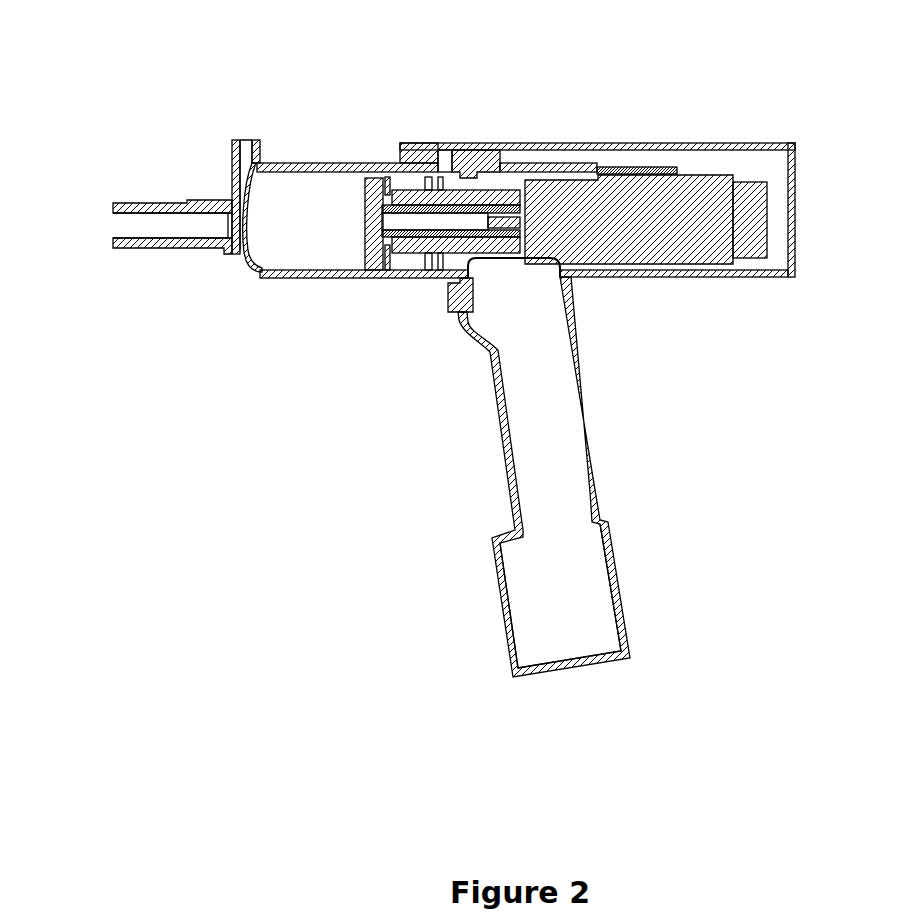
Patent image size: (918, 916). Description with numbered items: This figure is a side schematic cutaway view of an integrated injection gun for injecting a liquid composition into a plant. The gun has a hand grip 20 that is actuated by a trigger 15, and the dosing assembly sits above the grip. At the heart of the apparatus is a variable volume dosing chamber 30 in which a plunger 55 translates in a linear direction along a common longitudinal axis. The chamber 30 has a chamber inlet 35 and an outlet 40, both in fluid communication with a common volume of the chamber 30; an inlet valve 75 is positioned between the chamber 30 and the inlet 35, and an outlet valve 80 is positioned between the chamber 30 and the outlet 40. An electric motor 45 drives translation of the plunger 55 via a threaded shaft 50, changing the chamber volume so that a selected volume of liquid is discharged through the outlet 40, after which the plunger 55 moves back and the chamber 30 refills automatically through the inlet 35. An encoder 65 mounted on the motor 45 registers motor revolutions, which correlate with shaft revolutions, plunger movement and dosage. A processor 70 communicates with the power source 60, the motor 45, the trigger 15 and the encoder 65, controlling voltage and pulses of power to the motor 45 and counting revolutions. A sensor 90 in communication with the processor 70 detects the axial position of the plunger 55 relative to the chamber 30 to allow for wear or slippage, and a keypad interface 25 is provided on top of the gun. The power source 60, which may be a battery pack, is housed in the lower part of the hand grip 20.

The trigger 15 is at (448, 300).
The hand grip 20 is at (597, 448).
The keypad interface 25 is at (440, 143).
The dosing chamber 30 is at (277, 280).
The chamber inlet 35 is at (245, 147).
The outlet 40 is at (115, 222).
The electric motor 45 is at (690, 195).
The threaded shaft 50 is at (478, 192).
The plunger 55 is at (412, 258).
The power source 60 is at (523, 585).
The encoder 65 is at (752, 258).
The processor 70 is at (613, 167).
The inlet valve 75 is at (256, 160).
The outlet valve 80 is at (210, 225).
The sensor 90 is at (468, 155).